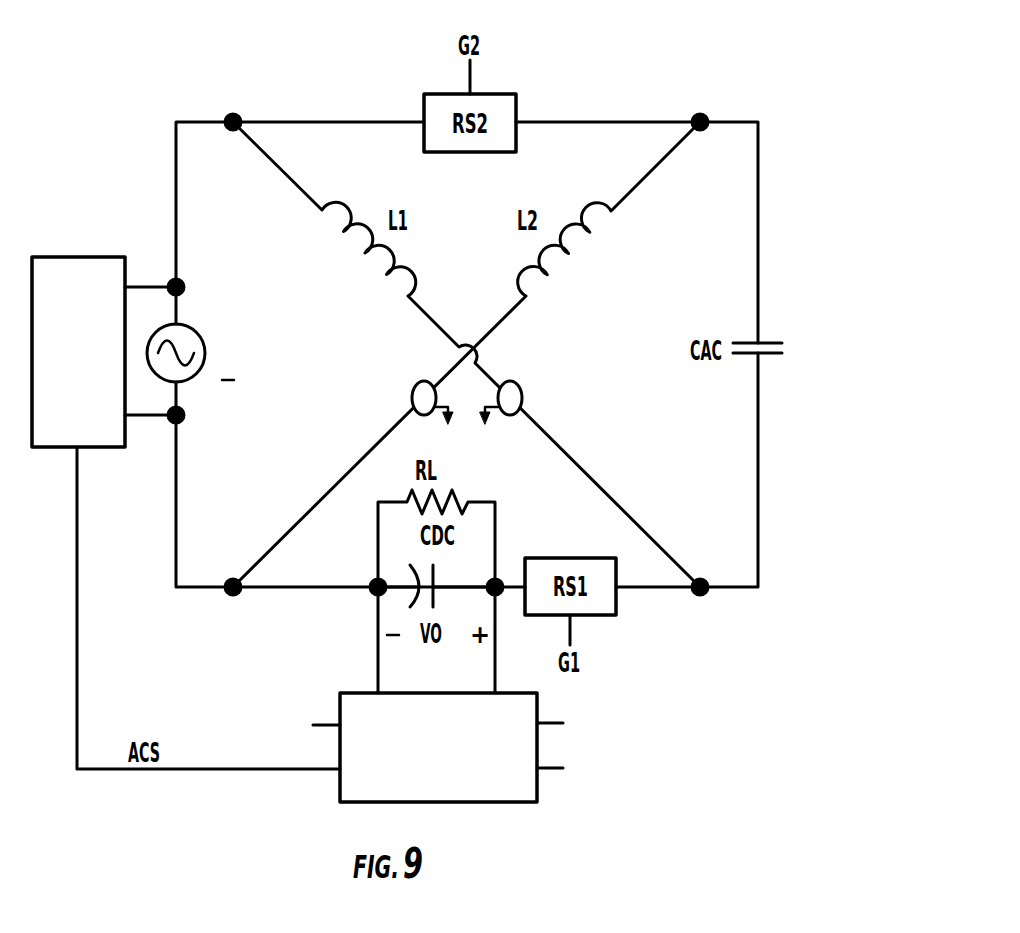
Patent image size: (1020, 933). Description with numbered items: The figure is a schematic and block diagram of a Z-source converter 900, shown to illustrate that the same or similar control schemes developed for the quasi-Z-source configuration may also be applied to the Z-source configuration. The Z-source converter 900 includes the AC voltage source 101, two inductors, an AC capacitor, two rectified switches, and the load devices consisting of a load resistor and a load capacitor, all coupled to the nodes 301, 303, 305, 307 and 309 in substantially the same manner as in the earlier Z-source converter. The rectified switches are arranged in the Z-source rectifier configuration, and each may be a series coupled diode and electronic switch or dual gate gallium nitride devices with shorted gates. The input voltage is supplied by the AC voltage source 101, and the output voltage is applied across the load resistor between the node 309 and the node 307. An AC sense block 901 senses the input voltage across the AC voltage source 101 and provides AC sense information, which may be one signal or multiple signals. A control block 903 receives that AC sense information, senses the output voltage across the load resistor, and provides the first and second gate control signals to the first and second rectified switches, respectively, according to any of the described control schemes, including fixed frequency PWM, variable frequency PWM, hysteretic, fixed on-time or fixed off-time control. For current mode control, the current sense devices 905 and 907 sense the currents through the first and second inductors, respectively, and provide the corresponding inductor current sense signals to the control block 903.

The Z-source converter 900 is at (380, 40).
The node 301 is at (237, 116).
The node 305 is at (704, 117).
The node 307 is at (234, 594).
The node 303 is at (705, 592).
The node 309 is at (498, 580).
The AC voltage source 101 is at (190, 327).
The AC sense block 901 is at (93, 389).
The control block 903 is at (454, 758).
The current sense device 905 is at (520, 383).
The current sense device 907 is at (414, 383).